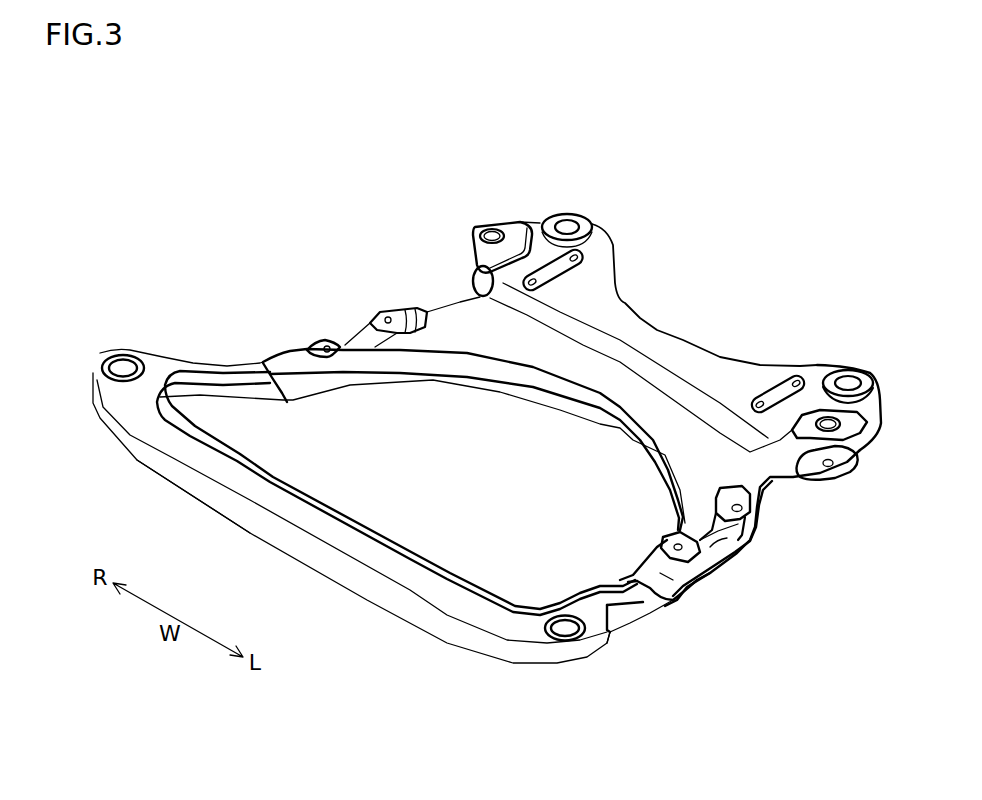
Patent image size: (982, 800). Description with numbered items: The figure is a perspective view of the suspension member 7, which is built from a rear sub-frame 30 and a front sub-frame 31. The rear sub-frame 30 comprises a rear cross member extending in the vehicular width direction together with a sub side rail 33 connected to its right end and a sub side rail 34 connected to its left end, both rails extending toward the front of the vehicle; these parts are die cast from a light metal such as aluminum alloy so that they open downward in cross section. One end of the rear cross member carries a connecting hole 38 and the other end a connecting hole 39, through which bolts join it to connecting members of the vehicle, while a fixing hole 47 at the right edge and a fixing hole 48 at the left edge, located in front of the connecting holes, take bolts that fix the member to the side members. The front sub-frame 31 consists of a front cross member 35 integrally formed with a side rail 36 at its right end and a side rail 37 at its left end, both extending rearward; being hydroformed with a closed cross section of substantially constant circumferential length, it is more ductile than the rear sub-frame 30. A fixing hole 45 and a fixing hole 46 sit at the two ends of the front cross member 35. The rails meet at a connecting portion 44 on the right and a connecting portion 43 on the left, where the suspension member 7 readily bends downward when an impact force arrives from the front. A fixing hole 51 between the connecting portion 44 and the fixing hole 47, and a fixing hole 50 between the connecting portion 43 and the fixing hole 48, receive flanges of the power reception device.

The suspension member 7 is at (707, 136).
The rear sub-frame 30 is at (657, 343).
The front sub-frame 31 is at (328, 567).
The sub side rail 33 is at (350, 343).
The sub side rail 34 is at (757, 547).
The front cross member 35 is at (258, 523).
The side rail 36 is at (192, 357).
The side rail 37 is at (650, 608).
The connecting hole 38 is at (848, 380).
The connecting hole 39 is at (567, 222).
The connecting portion 43 is at (631, 575).
The connecting portion 44 is at (263, 362).
The fixing hole 45 is at (128, 362).
The fixing hole 46 is at (565, 625).
The fixing hole 47 is at (493, 229).
The fixing hole 48 is at (827, 417).
The fixing hole 50 is at (757, 507).
The fixing hole 51 is at (388, 318).